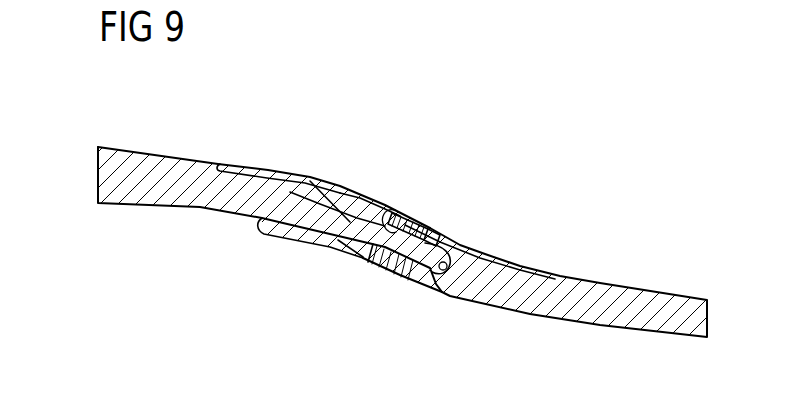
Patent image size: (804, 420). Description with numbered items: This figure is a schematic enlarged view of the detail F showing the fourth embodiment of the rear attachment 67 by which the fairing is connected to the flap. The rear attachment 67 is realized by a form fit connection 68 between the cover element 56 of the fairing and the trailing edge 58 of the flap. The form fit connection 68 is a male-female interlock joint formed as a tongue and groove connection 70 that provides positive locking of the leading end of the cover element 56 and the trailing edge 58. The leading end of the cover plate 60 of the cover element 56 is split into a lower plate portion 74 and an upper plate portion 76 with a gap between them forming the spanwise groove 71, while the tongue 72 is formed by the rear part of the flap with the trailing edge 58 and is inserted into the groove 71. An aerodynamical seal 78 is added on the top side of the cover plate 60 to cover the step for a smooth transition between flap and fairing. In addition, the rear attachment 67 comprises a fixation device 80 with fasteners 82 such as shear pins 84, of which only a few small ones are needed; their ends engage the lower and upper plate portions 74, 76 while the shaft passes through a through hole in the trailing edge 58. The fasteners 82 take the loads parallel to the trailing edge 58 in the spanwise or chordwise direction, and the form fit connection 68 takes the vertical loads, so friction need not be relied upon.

The cover element 56 is at (575, 282).
The cover plate 60 is at (686, 300).
The trailing edge 58 is at (448, 247).
The rear attachment 67 is at (402, 266).
The form fit connection 68 is at (402, 245).
The tongue and groove connection 70 is at (403, 312).
The groove 71 is at (440, 278).
The tongue 72 is at (366, 250).
The lower plate portion 74 is at (323, 238).
The upper plate portion 76 is at (353, 186).
The aerodynamical seal 78 is at (260, 168).
The fixation device 80 is at (426, 185).
The fastener 82 is at (440, 230).
The shear pin 84 is at (384, 228).
The detail F is at (644, 94).